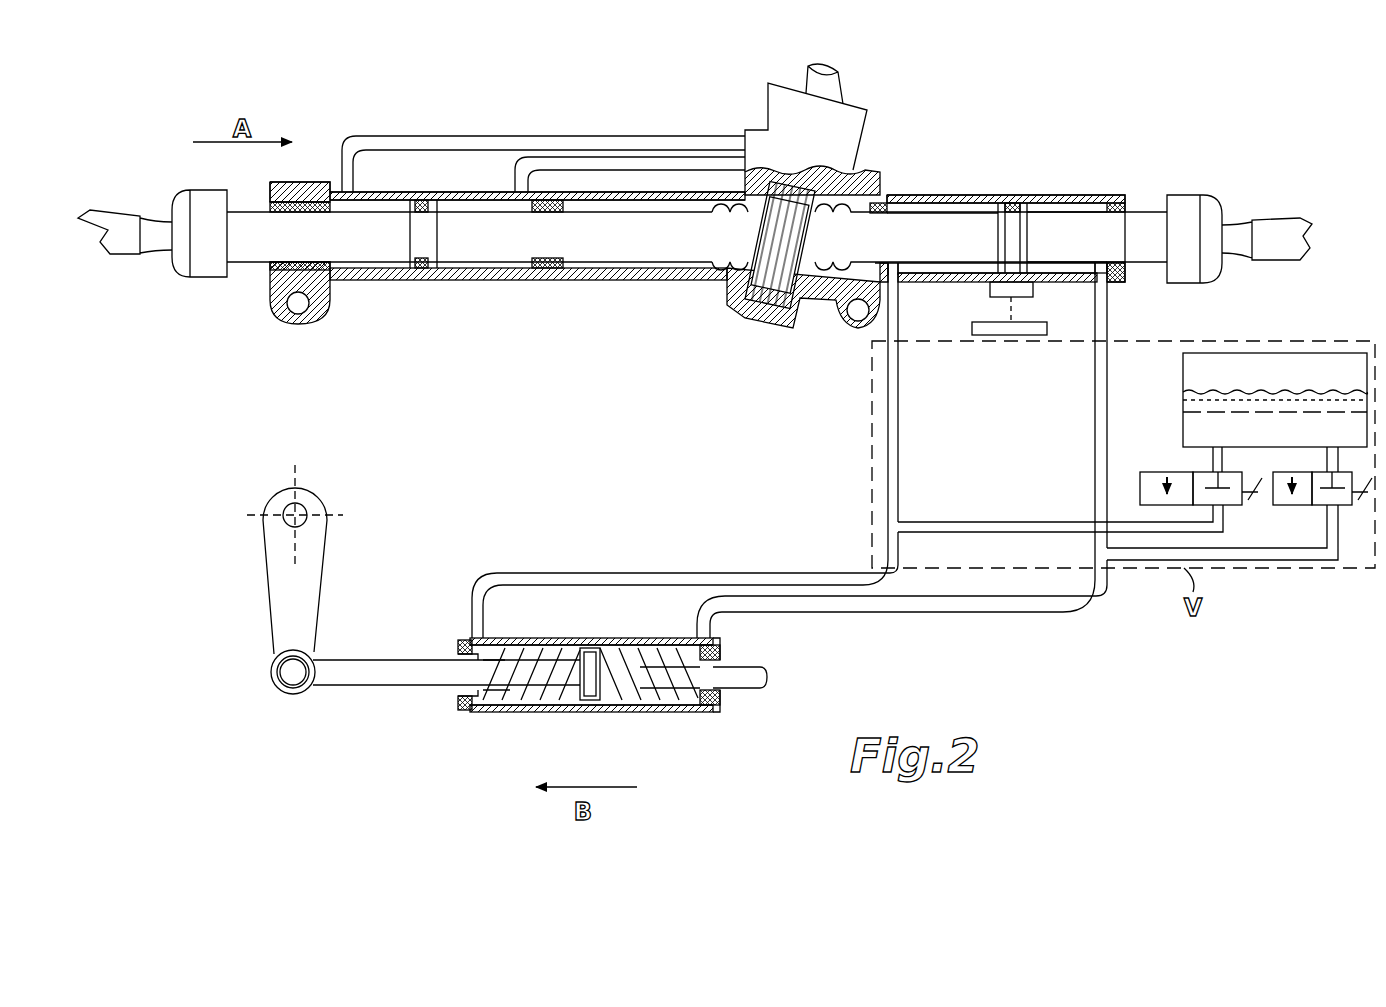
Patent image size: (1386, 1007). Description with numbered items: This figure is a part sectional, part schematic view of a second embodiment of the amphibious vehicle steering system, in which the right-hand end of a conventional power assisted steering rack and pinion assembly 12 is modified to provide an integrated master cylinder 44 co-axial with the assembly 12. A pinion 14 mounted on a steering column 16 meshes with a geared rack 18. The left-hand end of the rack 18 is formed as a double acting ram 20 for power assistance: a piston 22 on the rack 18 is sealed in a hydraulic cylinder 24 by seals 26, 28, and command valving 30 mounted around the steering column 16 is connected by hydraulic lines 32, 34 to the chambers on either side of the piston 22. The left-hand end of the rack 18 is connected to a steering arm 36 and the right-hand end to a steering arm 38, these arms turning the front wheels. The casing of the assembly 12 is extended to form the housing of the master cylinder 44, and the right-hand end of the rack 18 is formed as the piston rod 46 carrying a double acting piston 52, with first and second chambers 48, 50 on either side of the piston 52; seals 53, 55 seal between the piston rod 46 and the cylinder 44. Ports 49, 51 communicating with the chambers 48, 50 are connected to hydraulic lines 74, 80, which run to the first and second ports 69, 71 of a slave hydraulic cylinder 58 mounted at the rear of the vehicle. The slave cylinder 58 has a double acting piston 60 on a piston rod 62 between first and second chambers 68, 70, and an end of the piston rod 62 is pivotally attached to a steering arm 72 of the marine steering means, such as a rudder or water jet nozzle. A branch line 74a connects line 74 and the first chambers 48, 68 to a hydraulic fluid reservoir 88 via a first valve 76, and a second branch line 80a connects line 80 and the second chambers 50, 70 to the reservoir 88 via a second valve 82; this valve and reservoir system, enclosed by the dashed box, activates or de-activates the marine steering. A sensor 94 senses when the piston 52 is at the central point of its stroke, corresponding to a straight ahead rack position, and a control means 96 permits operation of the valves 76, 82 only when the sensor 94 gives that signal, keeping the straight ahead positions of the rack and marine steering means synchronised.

The power assisted steering rack and pinion assembly 12 is at (875, 165).
The pinion 14 is at (758, 310).
The steering column 16 is at (815, 80).
The geared rack 18 is at (730, 250).
The double acting ram 20 is at (482, 222).
The piston 22 is at (412, 205).
The hydraulic cylinder 24 is at (368, 272).
The seal 26 is at (268, 264).
The seal 28 is at (548, 272).
The command valving 30 is at (780, 118).
The hydraulic line 32 is at (565, 143).
The hydraulic line 34 is at (620, 163).
The steering arm 36 is at (116, 227).
The steering arm 38 is at (1272, 235).
The master cylinder 44 is at (1035, 196).
The piston rod 46 is at (1073, 222).
The first chamber 48 is at (958, 200).
The port 49 is at (893, 285).
The second chamber 50 is at (1077, 273).
The port 51 is at (1106, 295).
The double acting piston 52 is at (1010, 203).
The seal 53 is at (880, 203).
The seal 55 is at (1116, 205).
The slave hydraulic cylinder 58 is at (485, 713).
The double acting piston 60 is at (597, 701).
The piston rod 62 is at (372, 685).
The first chamber 68 is at (535, 655).
The first port 69 is at (472, 645).
The second chamber 70 is at (645, 656).
The second port 71 is at (718, 651).
The steering arm 72 is at (283, 598).
The hydraulic line 74 is at (898, 382).
The branch line 74a is at (977, 526).
The first valve 76 is at (1155, 471).
The hydraulic line 80 is at (1100, 484).
The second branch line 80a is at (1288, 560).
The second valve 82 is at (1343, 507).
The hydraulic fluid reservoir 88 is at (1330, 352).
The sensor 94 is at (1000, 292).
The control means 96 is at (1032, 332).